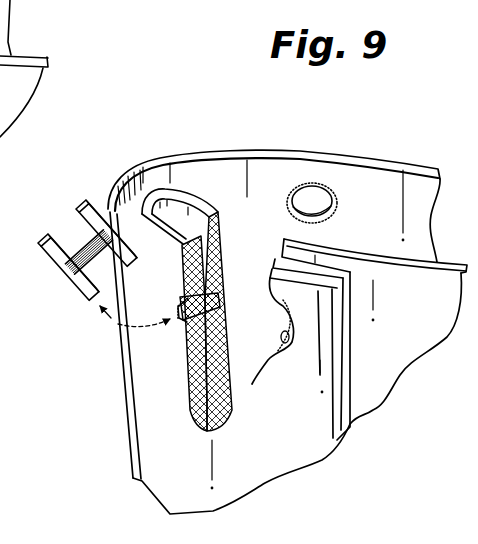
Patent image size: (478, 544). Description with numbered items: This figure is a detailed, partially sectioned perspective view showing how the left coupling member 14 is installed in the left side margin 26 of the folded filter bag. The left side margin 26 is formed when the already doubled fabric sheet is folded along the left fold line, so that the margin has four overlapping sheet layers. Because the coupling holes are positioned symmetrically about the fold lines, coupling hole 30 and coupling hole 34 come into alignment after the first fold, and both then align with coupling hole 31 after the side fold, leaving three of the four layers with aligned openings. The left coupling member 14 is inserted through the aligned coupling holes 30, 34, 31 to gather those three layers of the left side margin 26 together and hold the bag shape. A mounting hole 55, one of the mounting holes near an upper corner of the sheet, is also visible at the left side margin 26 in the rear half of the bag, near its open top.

The left coupling member 14 is at (60, 273).
The left side margin 26 is at (288, 431).
The coupling hole 30 is at (214, 328).
The coupling hole 31 is at (220, 288).
The coupling hole 34 is at (179, 323).
The mounting hole 55 is at (306, 198).